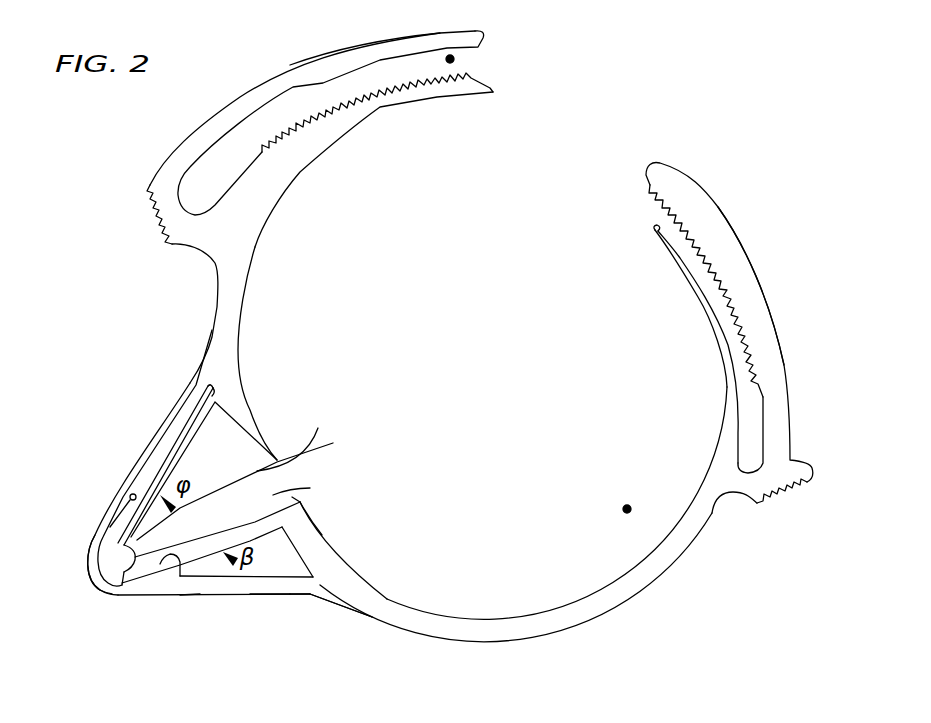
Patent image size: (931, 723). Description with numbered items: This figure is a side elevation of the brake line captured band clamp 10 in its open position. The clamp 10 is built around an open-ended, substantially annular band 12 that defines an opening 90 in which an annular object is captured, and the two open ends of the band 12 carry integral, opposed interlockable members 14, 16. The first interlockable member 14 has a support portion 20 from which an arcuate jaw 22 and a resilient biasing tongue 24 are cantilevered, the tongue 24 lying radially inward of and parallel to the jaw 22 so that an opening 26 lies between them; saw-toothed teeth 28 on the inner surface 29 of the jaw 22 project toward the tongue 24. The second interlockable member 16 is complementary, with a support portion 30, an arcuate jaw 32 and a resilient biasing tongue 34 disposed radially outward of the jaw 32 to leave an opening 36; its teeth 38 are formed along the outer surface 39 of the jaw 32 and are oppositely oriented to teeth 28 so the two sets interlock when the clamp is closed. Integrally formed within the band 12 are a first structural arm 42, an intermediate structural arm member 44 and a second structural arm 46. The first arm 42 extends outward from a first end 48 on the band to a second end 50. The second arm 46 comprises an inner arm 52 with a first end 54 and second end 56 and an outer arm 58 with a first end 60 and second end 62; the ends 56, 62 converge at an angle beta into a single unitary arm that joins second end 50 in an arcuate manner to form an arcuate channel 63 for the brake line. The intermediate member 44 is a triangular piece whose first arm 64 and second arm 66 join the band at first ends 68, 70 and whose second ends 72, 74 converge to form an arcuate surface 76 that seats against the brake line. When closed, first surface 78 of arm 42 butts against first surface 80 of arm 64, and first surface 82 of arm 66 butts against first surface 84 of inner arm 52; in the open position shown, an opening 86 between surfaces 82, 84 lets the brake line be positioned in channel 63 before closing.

The brake line captured band clamp 10 is at (590, 95).
The annular band 12 is at (223, 308).
The first interlockable member 14 is at (803, 399).
The second interlockable member 16 is at (242, 72).
The support portion 20 is at (766, 487).
The arcuate jaw 22 is at (700, 212).
The resilient biasing tongue 24 is at (690, 278).
The opening 26 is at (662, 222).
The teeth 28 is at (663, 208).
The inner surface 29 is at (755, 417).
The support portion 30 is at (170, 230).
The arcuate jaw 32 is at (320, 133).
The resilient biasing tongue 34 is at (355, 53).
The opening 36 is at (455, 59).
The teeth 38 is at (463, 75).
The outer surface 39 is at (500, 80).
The first structural arm 42 is at (157, 442).
The intermediate structural arm member 44 is at (333, 443).
The second structural arm 46 is at (297, 606).
The first end 48 is at (195, 380).
The second end 50 is at (85, 562).
The inner arm 52 is at (270, 513).
The first end 54 is at (290, 518).
The second end 56 is at (171, 565).
The outer arm 58 is at (270, 593).
The first end 60 is at (323, 596).
The second end 62 is at (190, 585).
The arcuate channel 63 is at (115, 578).
The first arm 64 is at (218, 403).
The second arm 66 is at (228, 480).
The first end 68 is at (212, 396).
The first end 70 is at (297, 444).
The second end 72 is at (112, 530).
The second end 74 is at (96, 593).
The arcuate surface 76 is at (92, 580).
The first surface 78 is at (130, 502).
The first surface 80 is at (182, 430).
The first surface 82 is at (206, 510).
The first surface 84 is at (160, 565).
The opening 86 is at (253, 489).
The opening 90 is at (627, 509).